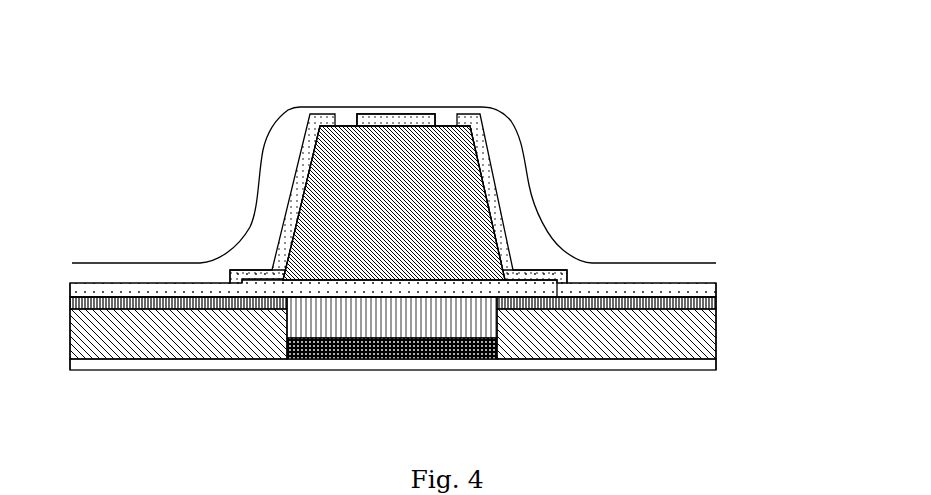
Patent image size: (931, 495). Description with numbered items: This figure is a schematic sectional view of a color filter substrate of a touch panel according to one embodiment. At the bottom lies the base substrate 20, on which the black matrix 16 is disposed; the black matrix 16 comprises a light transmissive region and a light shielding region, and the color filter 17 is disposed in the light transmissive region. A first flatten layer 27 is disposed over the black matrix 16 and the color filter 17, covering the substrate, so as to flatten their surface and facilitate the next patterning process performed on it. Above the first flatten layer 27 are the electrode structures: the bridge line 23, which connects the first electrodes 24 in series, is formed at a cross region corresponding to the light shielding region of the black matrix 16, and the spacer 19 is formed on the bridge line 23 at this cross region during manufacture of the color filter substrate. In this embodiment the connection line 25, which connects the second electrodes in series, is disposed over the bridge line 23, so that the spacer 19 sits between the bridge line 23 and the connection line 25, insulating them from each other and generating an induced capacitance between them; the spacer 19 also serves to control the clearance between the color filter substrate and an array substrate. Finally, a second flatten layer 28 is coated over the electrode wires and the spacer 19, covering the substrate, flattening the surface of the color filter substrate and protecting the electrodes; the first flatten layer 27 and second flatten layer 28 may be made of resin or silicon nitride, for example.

The black matrix 16 is at (417, 359).
The color filter 17 is at (716, 335).
The spacer 19 is at (467, 200).
The base substrate 20 is at (703, 365).
The bridge line 23 is at (507, 292).
The first electrodes 24 is at (600, 292).
The connection line 25 is at (402, 120).
The first flatten layer 27 is at (716, 300).
The second flatten layer 28 is at (676, 274).